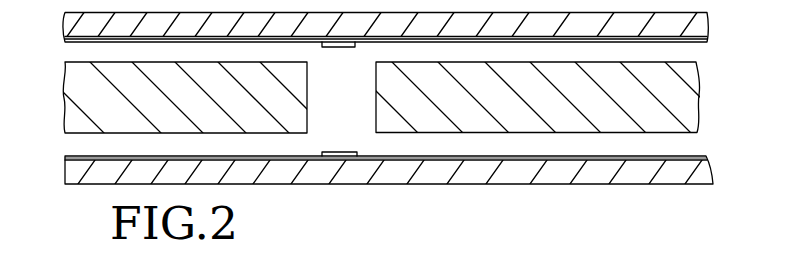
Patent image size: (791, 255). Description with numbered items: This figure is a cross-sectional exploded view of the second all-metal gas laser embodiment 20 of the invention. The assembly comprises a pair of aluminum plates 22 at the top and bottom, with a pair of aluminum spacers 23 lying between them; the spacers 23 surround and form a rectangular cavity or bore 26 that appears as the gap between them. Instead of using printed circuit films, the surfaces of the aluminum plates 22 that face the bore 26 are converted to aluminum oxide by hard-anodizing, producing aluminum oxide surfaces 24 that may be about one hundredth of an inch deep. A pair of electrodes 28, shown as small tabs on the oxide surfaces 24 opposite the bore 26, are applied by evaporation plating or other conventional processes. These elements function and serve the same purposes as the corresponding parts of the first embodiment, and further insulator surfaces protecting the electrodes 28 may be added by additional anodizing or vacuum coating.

The all-metal gas laser embodiment 20 is at (51, 163).
The aluminum plate 22 is at (65, 13).
The aluminum spacer 23 is at (78, 64).
The aluminum oxide surface 24 is at (495, 41).
The bore 26 is at (343, 77).
The electrode 28 is at (346, 156).